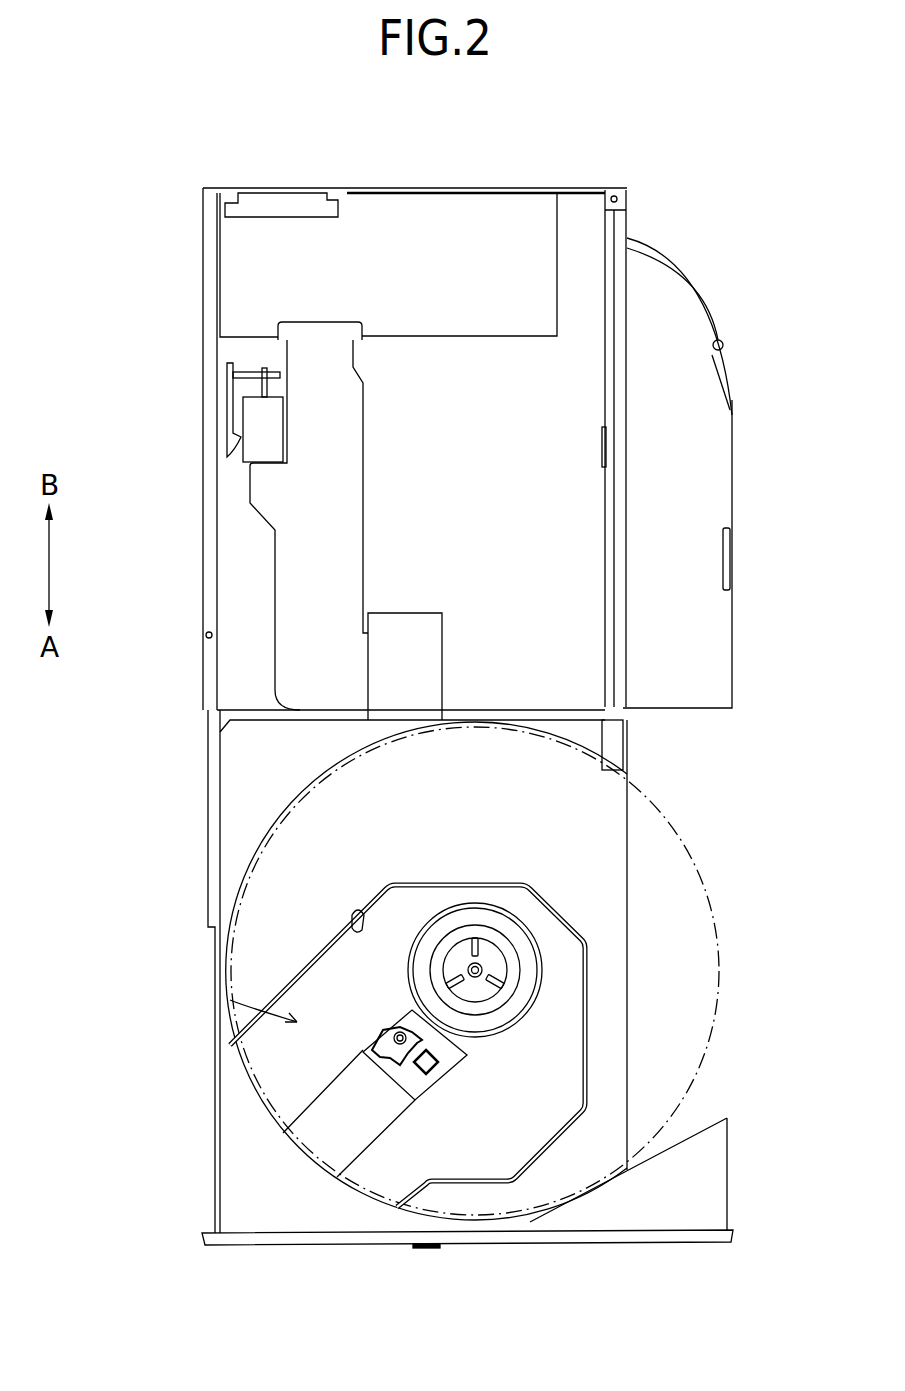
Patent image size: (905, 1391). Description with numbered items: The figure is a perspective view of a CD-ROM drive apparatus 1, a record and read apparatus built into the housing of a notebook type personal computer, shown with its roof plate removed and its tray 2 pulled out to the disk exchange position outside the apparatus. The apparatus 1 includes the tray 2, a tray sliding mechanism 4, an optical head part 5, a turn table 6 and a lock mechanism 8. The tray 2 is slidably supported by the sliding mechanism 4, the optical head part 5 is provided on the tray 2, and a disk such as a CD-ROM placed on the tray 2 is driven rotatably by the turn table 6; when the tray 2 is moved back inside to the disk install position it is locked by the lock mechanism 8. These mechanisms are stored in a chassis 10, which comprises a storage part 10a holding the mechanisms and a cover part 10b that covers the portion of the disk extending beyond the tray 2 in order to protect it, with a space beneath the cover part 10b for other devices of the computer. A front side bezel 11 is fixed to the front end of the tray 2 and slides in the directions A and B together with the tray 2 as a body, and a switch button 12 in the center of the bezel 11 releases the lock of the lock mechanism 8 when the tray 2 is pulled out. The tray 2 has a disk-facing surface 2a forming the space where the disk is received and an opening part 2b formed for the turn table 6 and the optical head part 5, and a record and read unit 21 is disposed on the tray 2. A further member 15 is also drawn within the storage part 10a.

The CD-ROM drive apparatus 1 is at (697, 161).
The tray 2 is at (250, 1200).
The disk-facing surface 2a is at (273, 875).
The opening part 2b is at (360, 918).
The tray sliding mechanism 4 is at (618, 712).
The optical head part 5 is at (443, 1057).
The turn table 6 is at (490, 953).
The lock mechanism 8 is at (250, 363).
The chassis 10 is at (202, 452).
The storage part 10a is at (553, 550).
The cover part 10b is at (703, 457).
The front side bezel 11 is at (323, 1245).
The switch button 12 is at (428, 1250).
The guide member 15 is at (353, 512).
The record and read unit 21 is at (230, 1000).